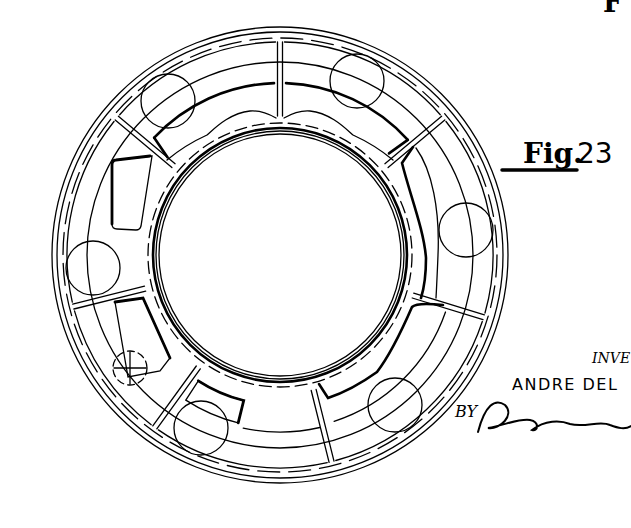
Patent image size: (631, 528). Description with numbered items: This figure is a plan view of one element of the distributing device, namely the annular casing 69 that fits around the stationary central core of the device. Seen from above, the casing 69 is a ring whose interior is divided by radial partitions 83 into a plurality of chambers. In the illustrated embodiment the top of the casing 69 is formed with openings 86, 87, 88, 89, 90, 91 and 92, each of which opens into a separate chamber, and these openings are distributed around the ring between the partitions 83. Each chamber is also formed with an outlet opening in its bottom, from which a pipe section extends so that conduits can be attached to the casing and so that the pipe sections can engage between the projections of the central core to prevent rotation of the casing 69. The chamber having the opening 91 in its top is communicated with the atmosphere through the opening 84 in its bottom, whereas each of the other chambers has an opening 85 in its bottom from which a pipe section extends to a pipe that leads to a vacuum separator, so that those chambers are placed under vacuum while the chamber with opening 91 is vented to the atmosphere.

The annular casing 69 is at (90, 174).
The radial partitions 83 is at (122, 128).
The opening 84 is at (112, 378).
The opening 85 is at (72, 290).
The opening 86 is at (432, 330).
The opening 87 is at (440, 280).
The opening 88 is at (395, 134).
The opening 89 is at (254, 98).
The opening 90 is at (138, 178).
The opening 91 is at (130, 328).
The opening 92 is at (207, 392).